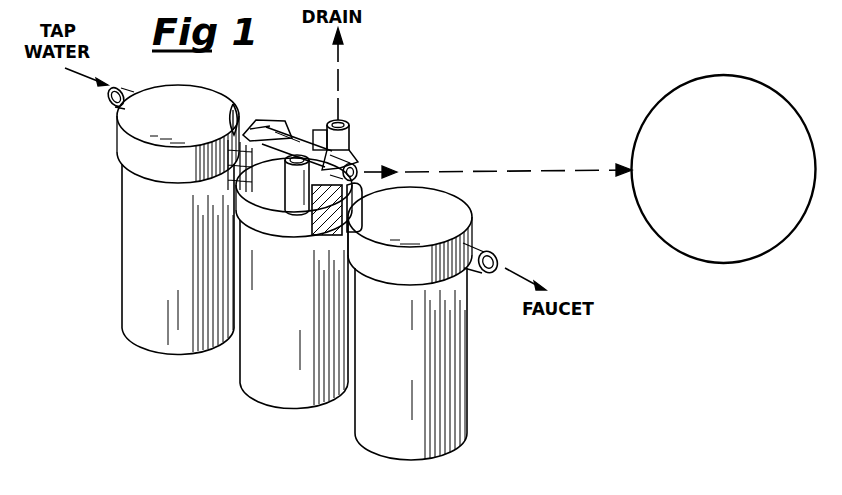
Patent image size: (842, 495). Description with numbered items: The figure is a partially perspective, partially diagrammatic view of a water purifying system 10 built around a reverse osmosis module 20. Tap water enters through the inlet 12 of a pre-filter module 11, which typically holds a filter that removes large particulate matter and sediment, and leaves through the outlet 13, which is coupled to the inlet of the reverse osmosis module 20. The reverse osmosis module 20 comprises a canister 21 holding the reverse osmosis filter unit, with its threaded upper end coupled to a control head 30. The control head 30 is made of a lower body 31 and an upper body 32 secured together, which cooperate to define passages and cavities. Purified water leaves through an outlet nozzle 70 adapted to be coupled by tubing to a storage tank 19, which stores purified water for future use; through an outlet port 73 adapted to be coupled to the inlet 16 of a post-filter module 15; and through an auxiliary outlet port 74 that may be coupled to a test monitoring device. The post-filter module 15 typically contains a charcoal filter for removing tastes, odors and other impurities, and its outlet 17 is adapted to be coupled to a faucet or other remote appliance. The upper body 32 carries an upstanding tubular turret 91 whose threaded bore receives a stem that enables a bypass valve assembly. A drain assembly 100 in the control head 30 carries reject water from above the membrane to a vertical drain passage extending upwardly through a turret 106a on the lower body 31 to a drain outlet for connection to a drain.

The water purifying system 10 is at (489, 102).
The pre-filter module 11 is at (122, 206).
The inlet 12 is at (128, 88).
The outlet 13 is at (234, 108).
The post-filter module 15 is at (465, 358).
The inlet 16 is at (358, 197).
The outlet 17 is at (480, 250).
The storage tank 19 is at (661, 103).
The reverse osmosis module 20 is at (228, 394).
The canister 21 is at (272, 396).
The control head 30 is at (348, 120).
The lower body 31 is at (228, 192).
The upper body 32 is at (257, 120).
The outlet nozzle 70 is at (376, 158).
The outlet port 73 is at (336, 236).
The auxiliary outlet port 74 is at (355, 152).
The tubular turret 91 is at (307, 127).
The drain assembly 100 is at (286, 216).
The turret 106a is at (360, 138).